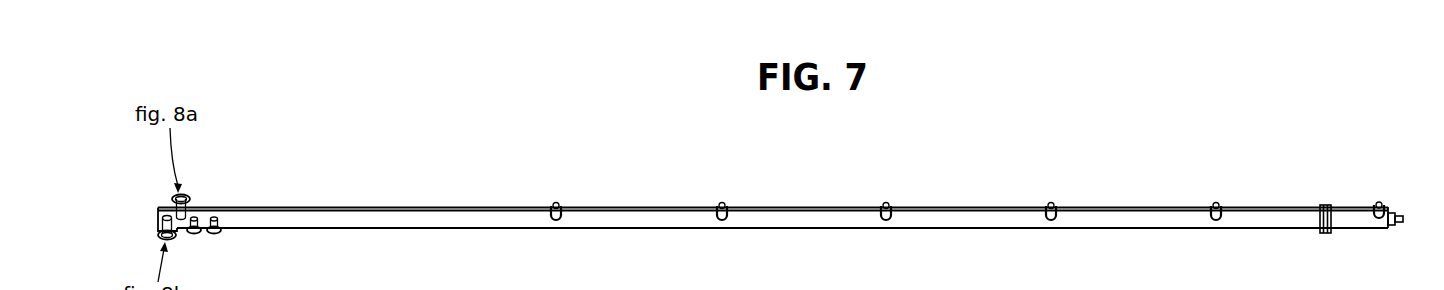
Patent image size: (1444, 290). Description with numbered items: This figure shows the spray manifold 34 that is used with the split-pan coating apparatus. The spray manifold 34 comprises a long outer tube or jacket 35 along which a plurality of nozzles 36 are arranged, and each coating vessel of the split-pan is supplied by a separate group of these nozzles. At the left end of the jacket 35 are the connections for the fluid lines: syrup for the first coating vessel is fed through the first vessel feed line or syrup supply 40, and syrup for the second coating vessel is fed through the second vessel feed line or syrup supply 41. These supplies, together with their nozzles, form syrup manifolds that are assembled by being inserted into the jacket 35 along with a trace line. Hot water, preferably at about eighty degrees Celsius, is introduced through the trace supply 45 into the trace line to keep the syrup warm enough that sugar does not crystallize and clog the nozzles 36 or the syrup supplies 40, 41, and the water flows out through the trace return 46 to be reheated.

The spray manifold 34 is at (927, 239).
The outer tube or jacket 35 is at (1247, 230).
The nozzles 36 is at (1384, 204).
The first vessel feed line or syrup supply 40 is at (187, 194).
The second vessel feed line or syrup supply 41 is at (158, 236).
The trace supply 45 is at (198, 234).
The trace return 46 is at (219, 233).